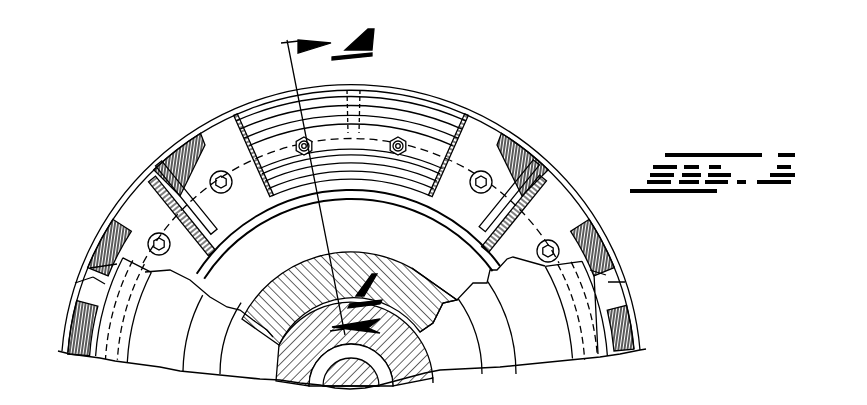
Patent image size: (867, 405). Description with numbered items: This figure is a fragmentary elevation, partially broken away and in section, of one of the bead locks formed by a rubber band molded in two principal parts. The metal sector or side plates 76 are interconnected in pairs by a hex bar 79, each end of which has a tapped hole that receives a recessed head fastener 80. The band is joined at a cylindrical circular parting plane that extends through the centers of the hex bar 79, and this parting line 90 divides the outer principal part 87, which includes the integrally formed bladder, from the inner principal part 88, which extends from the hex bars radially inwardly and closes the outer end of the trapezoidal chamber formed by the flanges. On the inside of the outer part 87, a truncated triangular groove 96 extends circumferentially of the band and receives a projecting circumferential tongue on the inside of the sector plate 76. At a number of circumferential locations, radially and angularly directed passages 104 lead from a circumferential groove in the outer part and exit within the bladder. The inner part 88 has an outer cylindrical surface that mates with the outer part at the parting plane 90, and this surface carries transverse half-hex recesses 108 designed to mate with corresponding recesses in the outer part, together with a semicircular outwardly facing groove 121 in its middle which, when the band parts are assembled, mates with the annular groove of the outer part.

The sector plate 76 is at (215, 138).
The hex bar 79 is at (410, 138).
The recessed head fastener 80 is at (493, 175).
The outer principal part 87 is at (469, 101).
The inner principal part 88 is at (377, 203).
The parting line 90 is at (378, 140).
The truncated triangular groove 96 is at (265, 128).
The passage 104 is at (368, 98).
The half-hex recess 108 is at (331, 182).
The semicircular outwardly facing groove 121 is at (280, 208).